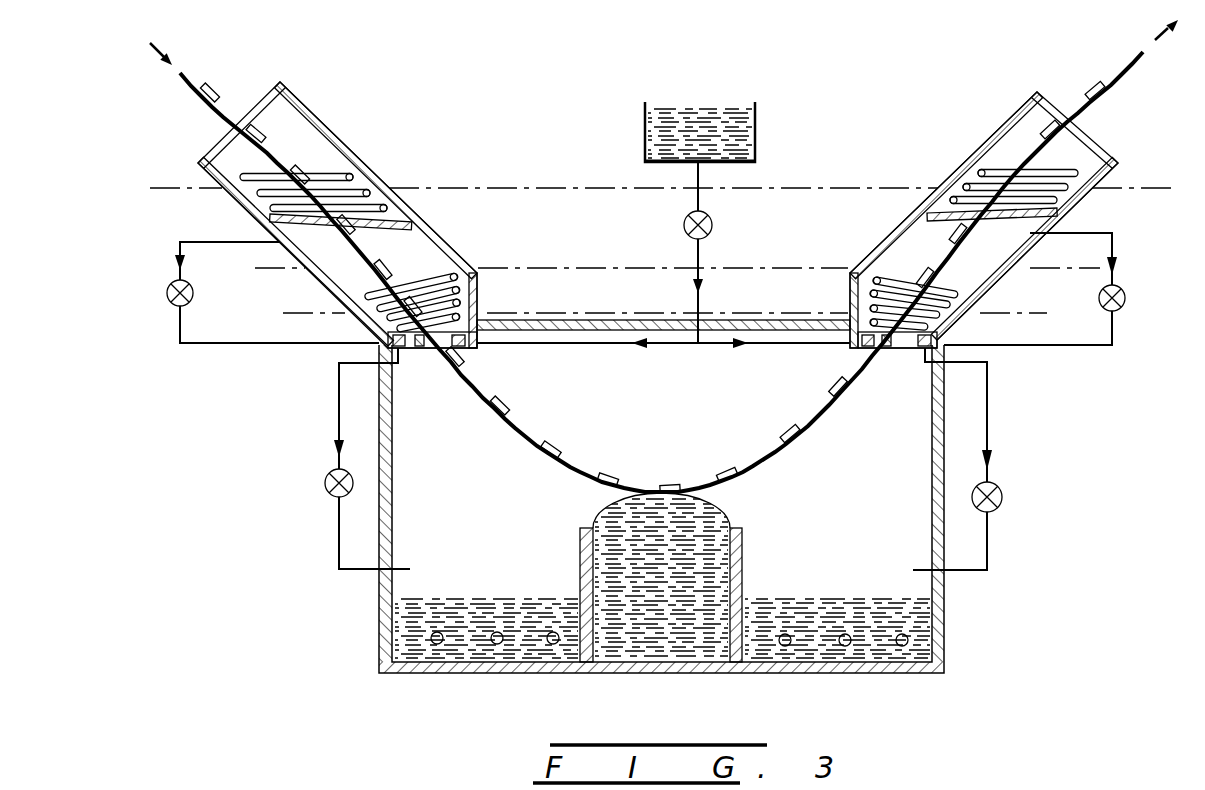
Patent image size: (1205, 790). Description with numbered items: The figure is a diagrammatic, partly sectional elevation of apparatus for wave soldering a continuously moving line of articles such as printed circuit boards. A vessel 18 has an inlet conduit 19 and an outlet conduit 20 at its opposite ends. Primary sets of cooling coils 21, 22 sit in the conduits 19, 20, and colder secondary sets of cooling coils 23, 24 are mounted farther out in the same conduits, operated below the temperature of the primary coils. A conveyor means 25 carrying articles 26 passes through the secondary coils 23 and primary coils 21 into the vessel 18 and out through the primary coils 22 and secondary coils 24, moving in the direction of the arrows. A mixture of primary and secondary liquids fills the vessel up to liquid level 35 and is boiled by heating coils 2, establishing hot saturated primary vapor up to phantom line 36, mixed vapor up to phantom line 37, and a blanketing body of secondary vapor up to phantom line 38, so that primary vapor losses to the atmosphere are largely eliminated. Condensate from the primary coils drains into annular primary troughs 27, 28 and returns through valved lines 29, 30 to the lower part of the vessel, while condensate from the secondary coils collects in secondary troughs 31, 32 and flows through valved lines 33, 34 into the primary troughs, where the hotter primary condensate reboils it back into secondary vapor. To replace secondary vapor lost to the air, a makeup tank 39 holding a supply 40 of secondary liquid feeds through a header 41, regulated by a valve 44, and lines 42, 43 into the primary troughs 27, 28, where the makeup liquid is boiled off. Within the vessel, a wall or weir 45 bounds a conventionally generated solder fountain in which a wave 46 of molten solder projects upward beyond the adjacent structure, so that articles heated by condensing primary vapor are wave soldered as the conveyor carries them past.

The heating coils 2 is at (437, 631).
The vessel 18 is at (930, 406).
The inlet conduit 19 is at (415, 215).
The outlet conduit 20 is at (910, 224).
The primary set of cooling coils 21 is at (472, 288).
The primary set of cooling coils 22 is at (850, 296).
The secondary set of cooling coils 23 is at (354, 176).
The secondary set of cooling coils 24 is at (975, 167).
The conveyor means 25 is at (530, 440).
The articles 26 is at (726, 474).
The primary trough 27 is at (470, 346).
The primary trough 28 is at (868, 348).
The valved line 29 is at (339, 402).
The valved line 30 is at (987, 440).
The secondary trough 31 is at (383, 229).
The secondary trough 32 is at (942, 226).
The valved line 33 is at (178, 340).
The valved line 34 is at (1112, 343).
The liquid level 35 is at (770, 594).
The phantom line 36 is at (600, 318).
The phantom line 37 is at (551, 268).
The phantom line 38 is at (641, 190).
The makeup tank 39 is at (757, 125).
The supply of makeup secondary liquid 40 is at (705, 105).
The header 41 is at (700, 177).
The line 42 is at (656, 345).
The line 43 is at (806, 345).
The valve 44 is at (712, 232).
The wall or weir 45 is at (742, 560).
The wave of molten solder 46 is at (612, 506).